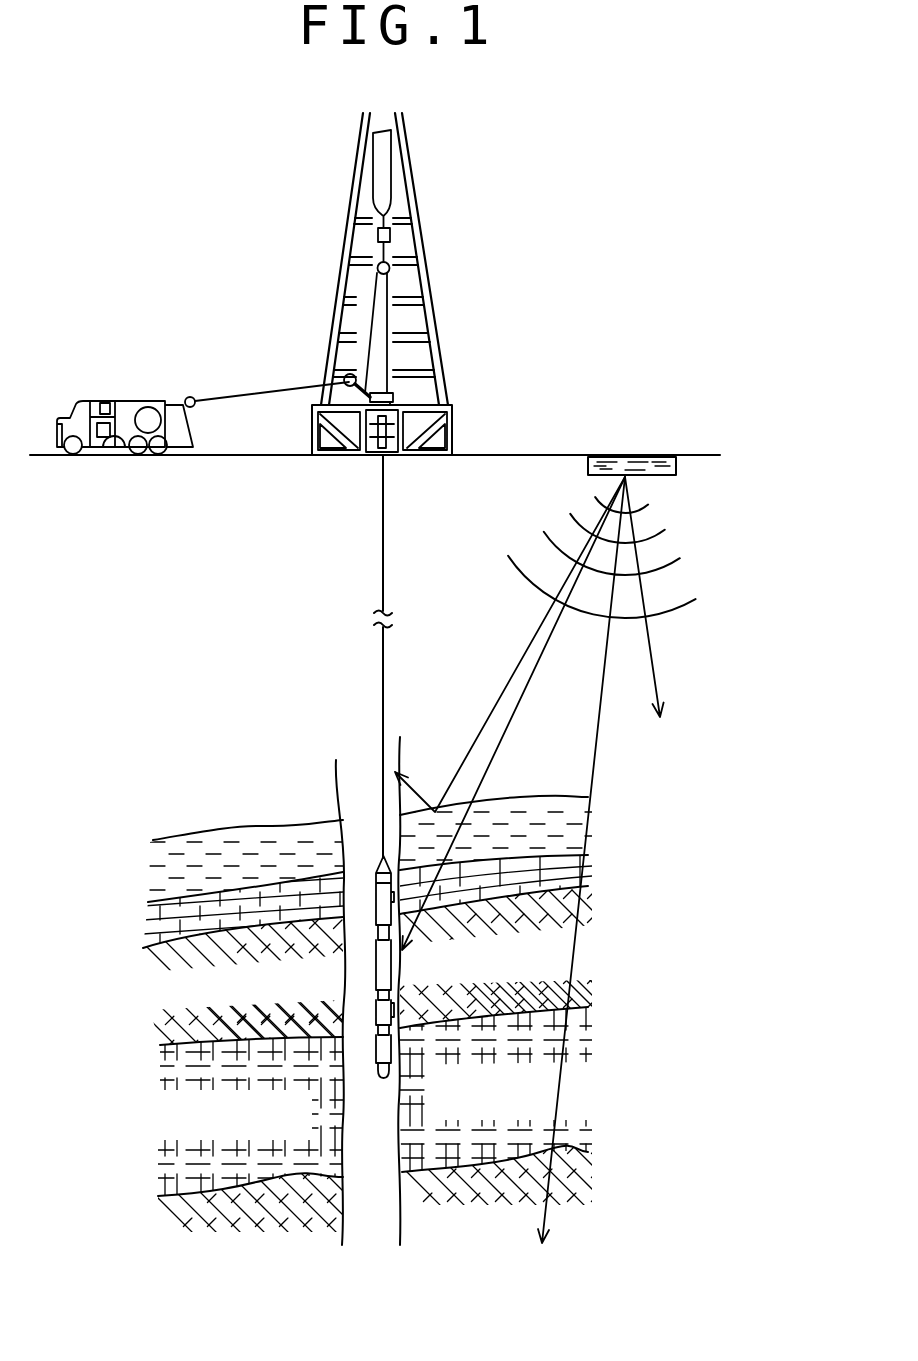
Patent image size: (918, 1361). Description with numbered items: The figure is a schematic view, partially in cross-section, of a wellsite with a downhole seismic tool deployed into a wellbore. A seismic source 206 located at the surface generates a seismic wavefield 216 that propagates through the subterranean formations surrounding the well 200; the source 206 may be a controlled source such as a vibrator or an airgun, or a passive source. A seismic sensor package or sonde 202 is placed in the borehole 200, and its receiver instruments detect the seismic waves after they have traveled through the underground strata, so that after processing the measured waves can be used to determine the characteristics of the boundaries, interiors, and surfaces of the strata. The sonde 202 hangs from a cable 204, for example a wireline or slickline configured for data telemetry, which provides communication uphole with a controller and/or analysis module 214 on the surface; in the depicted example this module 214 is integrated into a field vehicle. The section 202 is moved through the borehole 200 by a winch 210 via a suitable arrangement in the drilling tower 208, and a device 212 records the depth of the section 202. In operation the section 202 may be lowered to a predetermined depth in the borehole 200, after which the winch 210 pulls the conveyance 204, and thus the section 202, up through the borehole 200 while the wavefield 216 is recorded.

The well 200 is at (350, 1117).
The sonde 202 is at (378, 978).
The cable 204 is at (383, 555).
The seismic source 206 is at (627, 457).
The drilling tower 208 is at (441, 318).
The winch 210 is at (191, 396).
The device 212 is at (148, 410).
The controller and/or analysis module 214 is at (108, 452).
The seismic wavefield 216 is at (660, 692).